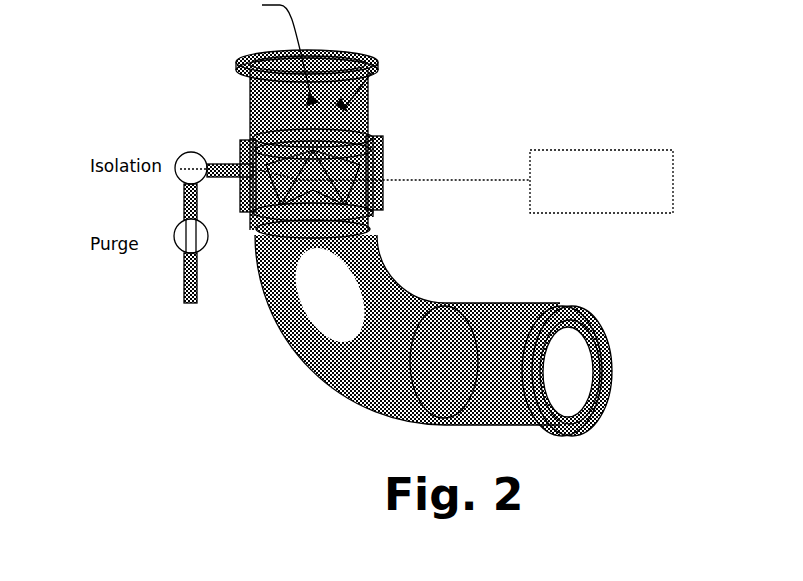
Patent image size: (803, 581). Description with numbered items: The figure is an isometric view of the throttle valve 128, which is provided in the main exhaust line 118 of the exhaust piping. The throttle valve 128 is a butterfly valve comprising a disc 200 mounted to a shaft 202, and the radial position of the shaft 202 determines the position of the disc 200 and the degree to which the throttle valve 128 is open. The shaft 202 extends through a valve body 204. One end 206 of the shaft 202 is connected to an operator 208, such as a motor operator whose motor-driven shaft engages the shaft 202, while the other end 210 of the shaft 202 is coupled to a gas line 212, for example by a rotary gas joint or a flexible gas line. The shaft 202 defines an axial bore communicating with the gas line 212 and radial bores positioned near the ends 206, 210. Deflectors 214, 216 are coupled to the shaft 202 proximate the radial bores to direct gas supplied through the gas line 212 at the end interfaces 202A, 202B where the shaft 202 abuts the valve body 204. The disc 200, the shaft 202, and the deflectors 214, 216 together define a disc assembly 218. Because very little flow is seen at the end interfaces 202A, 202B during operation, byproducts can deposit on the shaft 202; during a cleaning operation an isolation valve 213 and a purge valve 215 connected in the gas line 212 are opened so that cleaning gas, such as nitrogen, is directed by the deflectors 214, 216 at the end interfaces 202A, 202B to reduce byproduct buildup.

The main exhaust line 118 is at (347, 343).
The throttle valve 128 is at (295, 55).
The disc 200 is at (380, 230).
The shaft 202 is at (370, 104).
The end interface 202A is at (380, 178).
The end interface 202B is at (258, 162).
The valve body 204 is at (250, 213).
The one end of the shaft 206 is at (383, 194).
The operator 208 is at (603, 213).
The other end of the shaft 210 is at (248, 184).
The gas line 212 is at (186, 300).
The isolation valve 213 is at (183, 157).
The deflector 214 is at (383, 142).
The purge valve 215 is at (180, 237).
The deflector 216 is at (250, 140).
The disc assembly 218 is at (380, 68).